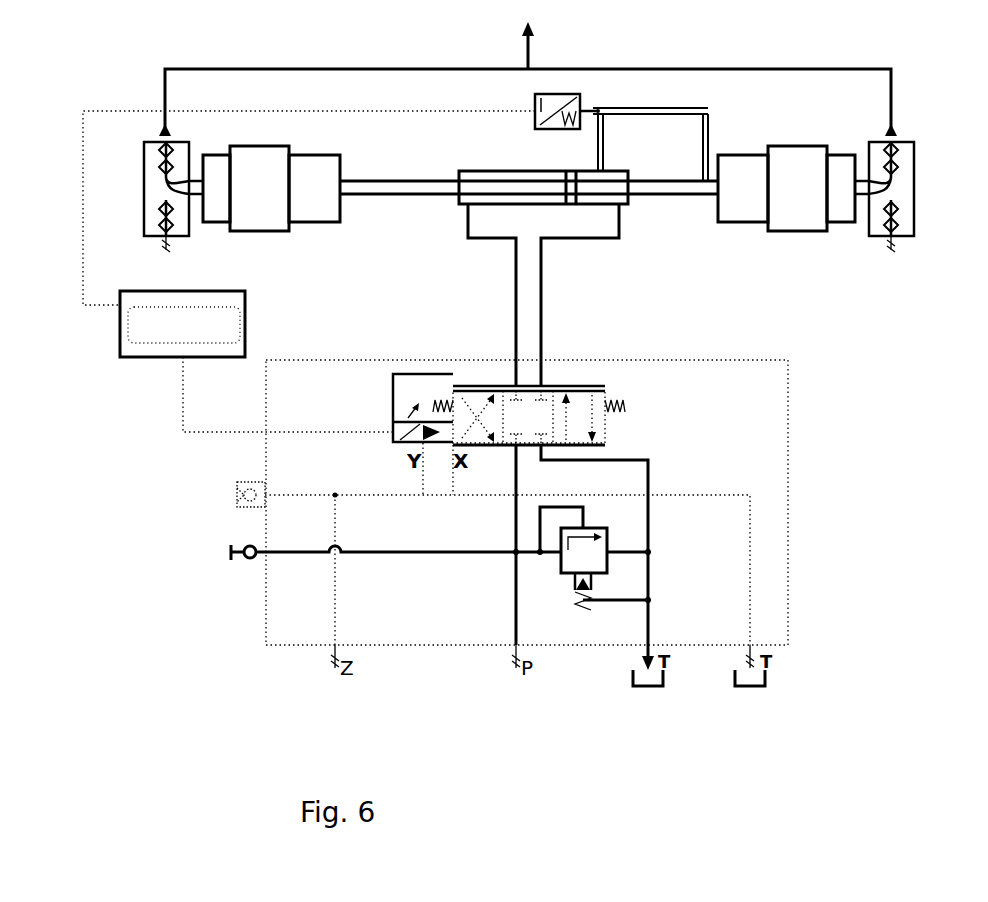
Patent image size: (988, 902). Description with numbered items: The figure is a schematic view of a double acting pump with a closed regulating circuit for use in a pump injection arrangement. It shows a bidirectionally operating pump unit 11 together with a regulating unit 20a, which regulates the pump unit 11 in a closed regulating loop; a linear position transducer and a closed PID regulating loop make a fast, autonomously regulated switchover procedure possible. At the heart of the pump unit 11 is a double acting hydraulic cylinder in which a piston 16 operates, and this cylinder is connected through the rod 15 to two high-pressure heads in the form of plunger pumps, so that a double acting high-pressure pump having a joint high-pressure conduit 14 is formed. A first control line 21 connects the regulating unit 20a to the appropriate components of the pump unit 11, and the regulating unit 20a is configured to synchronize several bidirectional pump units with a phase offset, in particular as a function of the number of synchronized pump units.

The pump unit 11 is at (143, 63).
The joint high-pressure conduit 14 is at (525, 50).
The piston rod 15 is at (403, 180).
The piston 16 is at (572, 172).
The regulating unit 20a is at (182, 324).
The first control line 21 is at (83, 210).